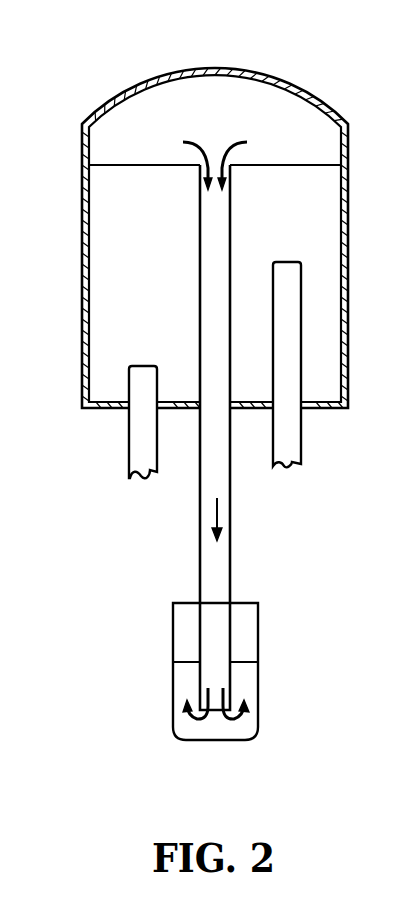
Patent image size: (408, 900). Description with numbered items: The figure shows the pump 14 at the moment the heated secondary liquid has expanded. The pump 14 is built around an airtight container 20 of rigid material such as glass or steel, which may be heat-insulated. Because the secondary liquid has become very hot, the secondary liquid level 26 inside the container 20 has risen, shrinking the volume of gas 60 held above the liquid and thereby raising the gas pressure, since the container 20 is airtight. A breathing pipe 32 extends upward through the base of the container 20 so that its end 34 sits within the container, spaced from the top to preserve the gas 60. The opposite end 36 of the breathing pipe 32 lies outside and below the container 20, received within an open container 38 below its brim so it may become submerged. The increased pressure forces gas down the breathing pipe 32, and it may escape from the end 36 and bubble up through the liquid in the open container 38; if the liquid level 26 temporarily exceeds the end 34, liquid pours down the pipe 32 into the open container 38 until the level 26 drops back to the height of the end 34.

The pump 14 is at (198, 249).
The airtight container 20 is at (124, 91).
The volume of gas 60 is at (182, 102).
The secondary liquid level 26 is at (298, 163).
The end of breathing pipe 34 is at (212, 163).
The breathing pipe 32 is at (241, 359).
The open container 38 is at (258, 637).
The opposite end of breathing pipe 36 is at (216, 712).